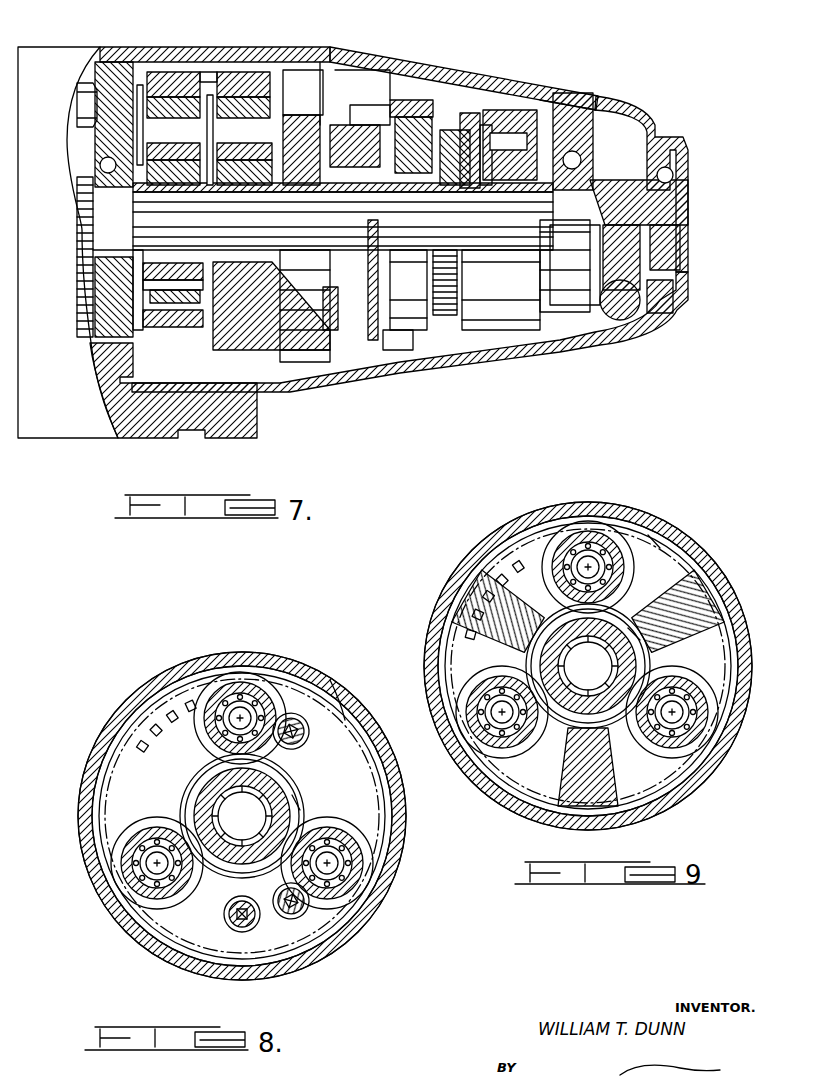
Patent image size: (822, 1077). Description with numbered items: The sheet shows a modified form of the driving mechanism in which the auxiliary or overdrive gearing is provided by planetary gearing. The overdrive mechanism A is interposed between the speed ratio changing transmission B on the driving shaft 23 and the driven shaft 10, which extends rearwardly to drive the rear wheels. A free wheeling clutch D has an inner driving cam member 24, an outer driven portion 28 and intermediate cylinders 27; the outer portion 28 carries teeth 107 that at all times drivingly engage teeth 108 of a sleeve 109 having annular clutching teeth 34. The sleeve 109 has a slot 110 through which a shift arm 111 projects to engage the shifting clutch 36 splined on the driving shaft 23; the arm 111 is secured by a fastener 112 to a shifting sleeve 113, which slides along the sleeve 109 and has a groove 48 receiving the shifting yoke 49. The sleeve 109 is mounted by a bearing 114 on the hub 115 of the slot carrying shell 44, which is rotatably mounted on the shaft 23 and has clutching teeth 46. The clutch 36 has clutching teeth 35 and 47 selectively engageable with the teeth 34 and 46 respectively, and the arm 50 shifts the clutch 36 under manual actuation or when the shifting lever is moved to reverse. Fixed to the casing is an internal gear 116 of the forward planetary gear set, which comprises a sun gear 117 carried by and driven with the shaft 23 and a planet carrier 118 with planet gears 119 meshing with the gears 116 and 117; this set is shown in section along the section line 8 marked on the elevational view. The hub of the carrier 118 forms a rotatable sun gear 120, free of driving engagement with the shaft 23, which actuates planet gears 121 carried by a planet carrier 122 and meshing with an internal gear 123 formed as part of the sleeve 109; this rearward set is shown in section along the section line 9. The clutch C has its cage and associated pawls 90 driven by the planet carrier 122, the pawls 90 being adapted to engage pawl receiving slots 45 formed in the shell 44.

In FIG. 7, the speed ratio changing transmission B is at (50, 40).
In FIG. 7, the planet gears 119 is at (145, 100).
In FIG. 8, the planet gears 119 is at (290, 700).
In FIG. 7, the planet carrier 118 is at (213, 95).
In FIG. 8, the planet carrier 118 is at (240, 690).
In FIG. 7, the internal gear 123 is at (250, 60).
In FIG. 9, the internal gear 123 is at (655, 540).
In FIG. 7, the planet carrier 122 is at (283, 120).
In FIG. 9, the planet carrier 122 is at (597, 545).
In FIG. 7, the pawl receiving slots 45 is at (300, 110).
In FIG. 7, the slot carrying shell 44 is at (327, 115).
In FIG. 7, the clutch C is at (353, 125).
In FIG. 7, the bearing 114 is at (355, 120).
In FIG. 7, the fastener 112 is at (440, 60).
In FIG. 7, the overdrive mechanism A is at (478, 108).
In FIG. 7, the teeth 107 is at (515, 120).
In FIG. 7, the cylinders 27 is at (548, 115).
In FIG. 7, the free wheeling clutch D is at (540, 100).
In FIG. 7, the sleeve 109 is at (365, 105).
In FIG. 7, the groove 48 is at (392, 115).
In FIG. 7, the shift arm 111 is at (449, 112).
In FIG. 7, the slot 110 is at (473, 125).
In FIG. 7, the driven shaft 10 is at (675, 205).
In FIG. 7, the clutching teeth 47 is at (408, 182).
In FIG. 7, the clutching teeth 35 is at (455, 175).
In FIG. 7, the clutching teeth 46 is at (343, 216).
In FIG. 7, the driving shaft 23 is at (80, 228).
In FIG. 8, the driving shaft 23 is at (258, 792).
In FIG. 9, the driving shaft 23 is at (618, 622).
In FIG. 7, the sun gear 117 is at (100, 262).
In FIG. 8, the sun gear 117 is at (295, 798).
In FIG. 7, the pawls 90 is at (245, 240).
In FIG. 7, the sun gear 120 is at (215, 235).
In FIG. 9, the sun gear 120 is at (640, 635).
In FIG. 7, the planet gears 121 is at (235, 250).
In FIG. 9, the planet gears 121 is at (640, 560).
In FIG. 7, the hub 115 is at (271, 306).
In FIG. 7, the yoke 49 is at (368, 250).
In FIG. 7, the shifting clutch 36 is at (412, 225).
In FIG. 7, the annular clutching teeth 34 is at (501, 288).
In FIG. 7, the inner driving cam member 24 is at (508, 185).
In FIG. 7, the arm 50 is at (372, 330).
In FIG. 7, the shifting sleeve 113 is at (408, 330).
In FIG. 7, the teeth 108 is at (445, 320).
In FIG. 7, the outer driven portion 28 is at (522, 320).
In FIG. 8, the internal gear 116 is at (338, 685).
In FIG. 7, the section line 8— 8 is at (180, 74).
In FIG. 7, the section line 9— 9 is at (238, 70).